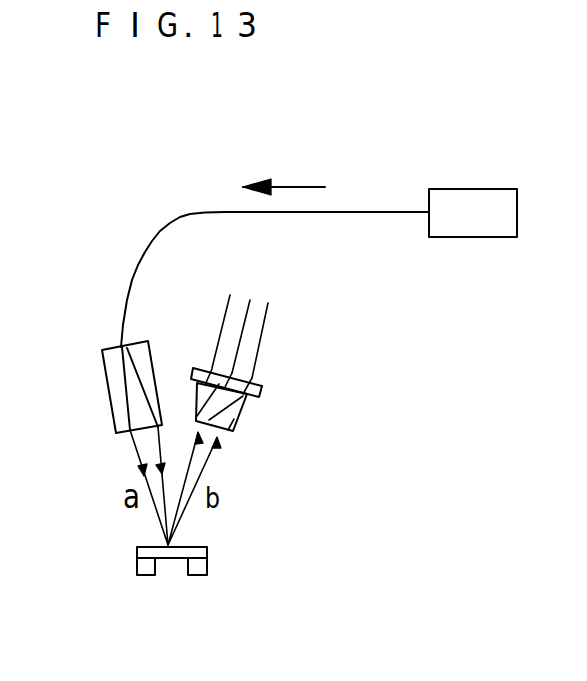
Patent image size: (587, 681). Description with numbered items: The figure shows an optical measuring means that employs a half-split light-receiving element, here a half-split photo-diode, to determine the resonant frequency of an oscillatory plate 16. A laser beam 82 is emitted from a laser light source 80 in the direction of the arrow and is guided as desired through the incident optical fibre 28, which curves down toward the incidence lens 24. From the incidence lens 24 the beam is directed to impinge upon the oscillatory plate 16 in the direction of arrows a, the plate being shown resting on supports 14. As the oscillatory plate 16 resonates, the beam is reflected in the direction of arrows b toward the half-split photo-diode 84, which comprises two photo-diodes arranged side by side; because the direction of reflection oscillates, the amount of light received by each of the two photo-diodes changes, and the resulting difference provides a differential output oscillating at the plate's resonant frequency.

The laser light source 80 is at (468, 190).
The laser beam 82 is at (298, 187).
The incident optical fibre 28 is at (150, 236).
The incidence lens 24 is at (113, 400).
The half-split photo-diode 84 is at (237, 410).
The oscillatory plate 16 is at (180, 555).
The support member 14 is at (143, 572).